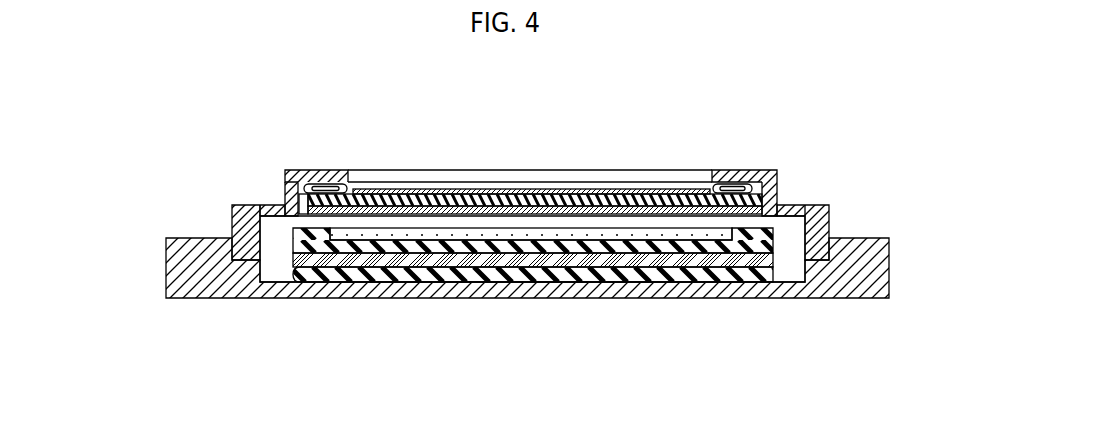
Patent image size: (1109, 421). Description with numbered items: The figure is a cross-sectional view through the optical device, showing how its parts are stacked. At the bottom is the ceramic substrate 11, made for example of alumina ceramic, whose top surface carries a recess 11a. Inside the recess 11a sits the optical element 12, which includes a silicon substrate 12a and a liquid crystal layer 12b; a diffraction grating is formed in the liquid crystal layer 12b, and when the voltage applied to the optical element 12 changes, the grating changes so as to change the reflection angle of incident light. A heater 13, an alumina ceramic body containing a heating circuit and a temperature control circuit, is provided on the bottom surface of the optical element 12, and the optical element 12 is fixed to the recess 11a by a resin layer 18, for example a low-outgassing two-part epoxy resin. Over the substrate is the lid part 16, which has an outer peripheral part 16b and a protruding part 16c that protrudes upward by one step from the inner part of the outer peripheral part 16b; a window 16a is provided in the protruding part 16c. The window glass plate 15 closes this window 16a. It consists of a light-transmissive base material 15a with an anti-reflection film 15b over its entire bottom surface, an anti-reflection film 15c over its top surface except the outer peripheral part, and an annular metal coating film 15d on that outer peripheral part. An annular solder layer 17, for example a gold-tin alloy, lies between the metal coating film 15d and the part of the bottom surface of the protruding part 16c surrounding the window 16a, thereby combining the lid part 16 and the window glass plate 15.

The ceramic substrate 11 is at (869, 287).
The recess 11a is at (426, 281).
The optical element 12 is at (533, 311).
The silicon substrate 12a is at (513, 254).
The liquid crystal layer 12b is at (557, 237).
The heater 13 is at (648, 262).
The window glass plate 15 is at (535, 161).
The light-transmissive base material 15a is at (405, 207).
The anti-reflection film 15b is at (448, 200).
The anti-reflection film 15c is at (487, 193).
The metal coating film 15d is at (312, 189).
The lid part 16 is at (530, 163).
The window 16a is at (531, 163).
The outer peripheral part 16b is at (801, 205).
The protruding part 16c is at (753, 183).
The solder layer 17 is at (336, 184).
The resin layer 18 is at (722, 283).